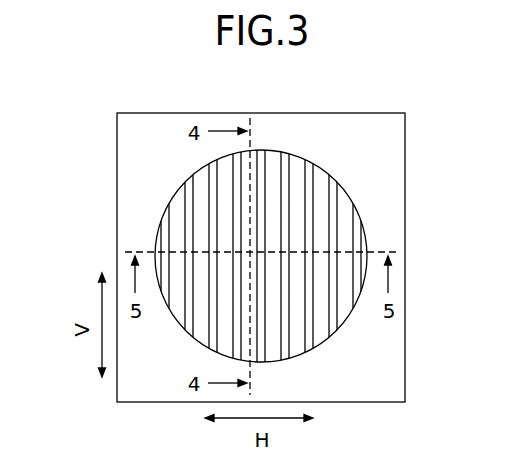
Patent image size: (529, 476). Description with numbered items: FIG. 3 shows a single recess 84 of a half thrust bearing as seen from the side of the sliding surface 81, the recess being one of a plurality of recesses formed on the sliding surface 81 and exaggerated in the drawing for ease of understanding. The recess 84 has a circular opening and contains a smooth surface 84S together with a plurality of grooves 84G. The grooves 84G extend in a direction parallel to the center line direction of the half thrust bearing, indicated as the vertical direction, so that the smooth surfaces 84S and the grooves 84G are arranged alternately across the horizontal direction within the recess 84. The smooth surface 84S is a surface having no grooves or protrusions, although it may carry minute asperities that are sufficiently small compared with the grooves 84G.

The sliding surface 81 is at (399, 148).
The recess 84 is at (283, 150).
The groove 84G is at (190, 236).
The smooth surface 84S is at (317, 242).